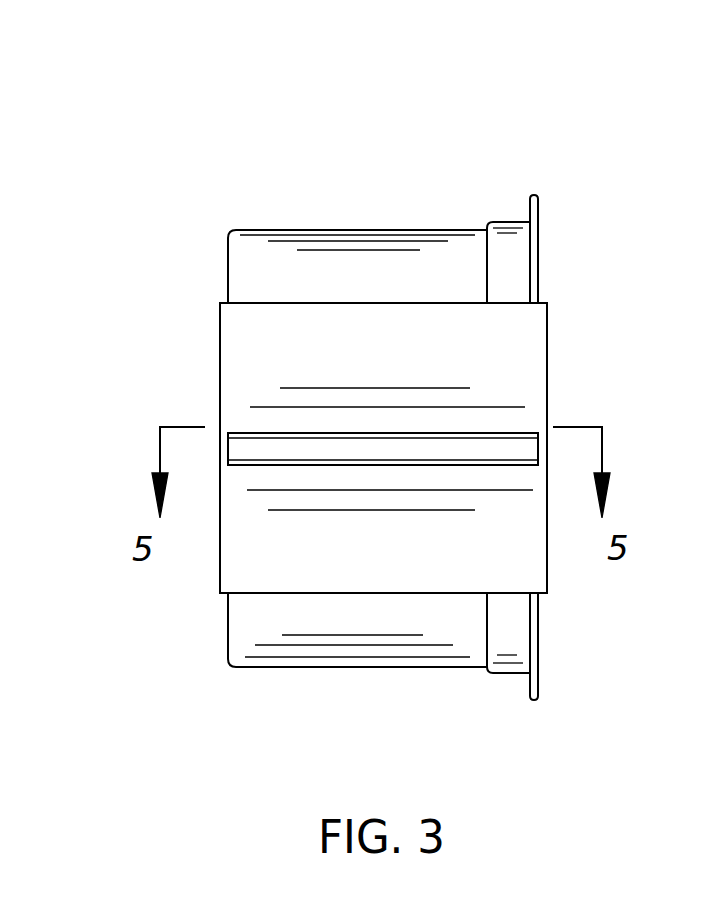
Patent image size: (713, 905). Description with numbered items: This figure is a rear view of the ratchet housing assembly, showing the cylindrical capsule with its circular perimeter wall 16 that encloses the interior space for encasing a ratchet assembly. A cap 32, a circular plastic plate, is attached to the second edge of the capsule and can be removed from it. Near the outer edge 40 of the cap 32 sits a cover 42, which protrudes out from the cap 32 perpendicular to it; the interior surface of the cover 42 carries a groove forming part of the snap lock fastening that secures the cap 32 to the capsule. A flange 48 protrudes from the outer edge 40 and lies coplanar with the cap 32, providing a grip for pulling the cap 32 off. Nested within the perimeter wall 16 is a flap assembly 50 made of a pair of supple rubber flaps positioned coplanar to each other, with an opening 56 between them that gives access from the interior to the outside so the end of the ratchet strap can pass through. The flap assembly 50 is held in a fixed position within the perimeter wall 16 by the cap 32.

The perimeter wall 16 is at (342, 643).
The cap 32 is at (516, 738).
The outer edge 40 is at (538, 232).
The cover 42 is at (507, 240).
The flange 48 is at (538, 197).
The flap assembly 50 is at (250, 547).
The opening 56 is at (503, 448).